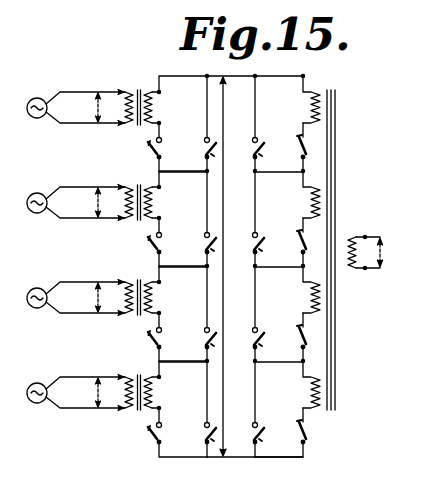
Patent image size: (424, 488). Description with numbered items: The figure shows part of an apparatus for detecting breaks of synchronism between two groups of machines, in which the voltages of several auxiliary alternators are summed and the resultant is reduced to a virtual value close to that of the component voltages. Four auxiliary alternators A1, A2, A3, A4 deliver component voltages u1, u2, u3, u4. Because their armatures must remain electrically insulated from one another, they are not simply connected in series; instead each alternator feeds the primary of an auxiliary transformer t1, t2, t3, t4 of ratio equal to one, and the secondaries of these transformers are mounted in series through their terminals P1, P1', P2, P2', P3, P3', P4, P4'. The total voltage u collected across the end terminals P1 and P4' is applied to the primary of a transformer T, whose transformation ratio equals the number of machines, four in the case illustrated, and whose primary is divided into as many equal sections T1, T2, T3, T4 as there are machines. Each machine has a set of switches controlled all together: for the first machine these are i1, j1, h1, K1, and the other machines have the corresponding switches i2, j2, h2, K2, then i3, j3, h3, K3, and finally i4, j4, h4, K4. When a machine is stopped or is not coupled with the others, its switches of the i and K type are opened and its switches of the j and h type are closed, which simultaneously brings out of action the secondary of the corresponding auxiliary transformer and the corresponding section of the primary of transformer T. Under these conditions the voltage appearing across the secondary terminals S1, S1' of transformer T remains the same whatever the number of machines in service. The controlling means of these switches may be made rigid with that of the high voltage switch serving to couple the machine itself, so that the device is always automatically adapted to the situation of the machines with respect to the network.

The auxiliary alternator A1 is at (68, 108).
The auxiliary alternator A2 is at (68, 203).
The auxiliary alternator A3 is at (68, 298).
The auxiliary alternator A4 is at (68, 393).
The component voltage u1 is at (89, 108).
The component voltage u2 is at (89, 203).
The component voltage u3 is at (89, 298).
The component voltage u4 is at (89, 393).
The auxiliary transformer t1 is at (138, 99).
The auxiliary transformer t2 is at (138, 194).
The auxiliary transformer t3 is at (138, 289).
The auxiliary transformer t4 is at (138, 384).
The switch i1 is at (169, 150).
The switch i2 is at (169, 245).
The switch i3 is at (169, 340).
The switch i4 is at (169, 435).
The end terminal P1 is at (227, 93).
The secondary terminal P2 is at (179, 188).
The secondary terminal P3 is at (179, 283).
The secondary terminal P4 is at (179, 378).
The secondary terminal P1' is at (167, 128).
The secondary terminal P2' is at (167, 223).
The secondary terminal P3' is at (167, 318).
The end terminal P4' is at (167, 413).
The switch j1 is at (198, 123).
The switch j2 is at (198, 218).
The switch j3 is at (198, 313).
The switch j4 is at (198, 408).
The switch h1 is at (248, 123).
The switch h2 is at (248, 218).
The switch h3 is at (248, 313).
The switch h4 is at (248, 408).
The switch K1 is at (280, 147).
The switch K2 is at (280, 242).
The switch K3 is at (280, 337).
The switch K4 is at (280, 432).
The transformer T is at (332, 239).
The primary section T1 is at (330, 98).
The primary section T2 is at (330, 193).
The primary section T3 is at (330, 288).
The primary section T4 is at (330, 383).
The voltage u is at (255, 267).
The secondary terminal S1 is at (364, 243).
The secondary terminal S1' is at (369, 279).